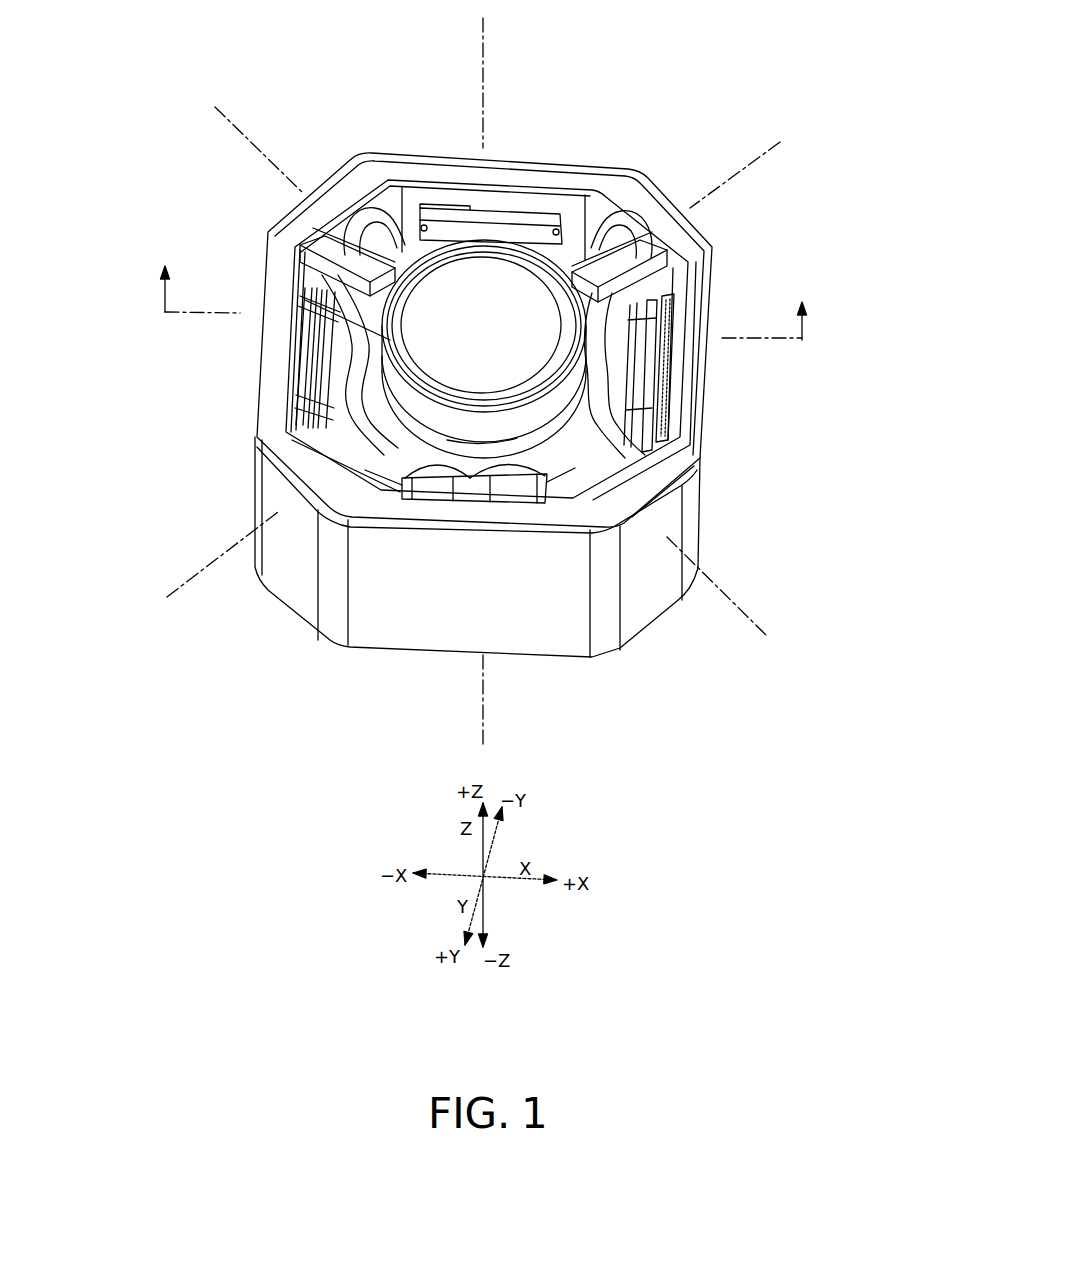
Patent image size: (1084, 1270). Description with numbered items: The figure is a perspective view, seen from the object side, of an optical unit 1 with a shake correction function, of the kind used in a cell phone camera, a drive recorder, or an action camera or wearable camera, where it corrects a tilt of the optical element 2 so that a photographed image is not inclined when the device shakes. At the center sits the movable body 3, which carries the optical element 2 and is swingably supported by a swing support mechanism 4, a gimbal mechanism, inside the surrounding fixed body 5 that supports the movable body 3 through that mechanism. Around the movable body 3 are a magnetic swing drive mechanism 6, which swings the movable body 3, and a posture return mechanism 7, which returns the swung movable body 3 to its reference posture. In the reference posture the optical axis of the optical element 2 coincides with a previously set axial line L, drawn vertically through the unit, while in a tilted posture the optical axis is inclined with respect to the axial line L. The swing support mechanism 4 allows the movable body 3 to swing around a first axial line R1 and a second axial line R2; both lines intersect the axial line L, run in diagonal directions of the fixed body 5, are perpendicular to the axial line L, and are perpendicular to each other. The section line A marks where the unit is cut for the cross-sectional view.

The optical unit 1 is at (281, 91).
The optical element 2 is at (494, 288).
The movable body 3 is at (532, 273).
The swing support mechanism 4 is at (604, 338).
The fixed body 5 is at (716, 245).
The magnetic swing drive mechanism 6 is at (650, 367).
The posture return mechanism 7 is at (660, 396).
The axial line L is at (483, 48).
The first axial line R1 is at (757, 618).
The second axial line R2 is at (190, 583).
The A-A line A is at (484, 291).